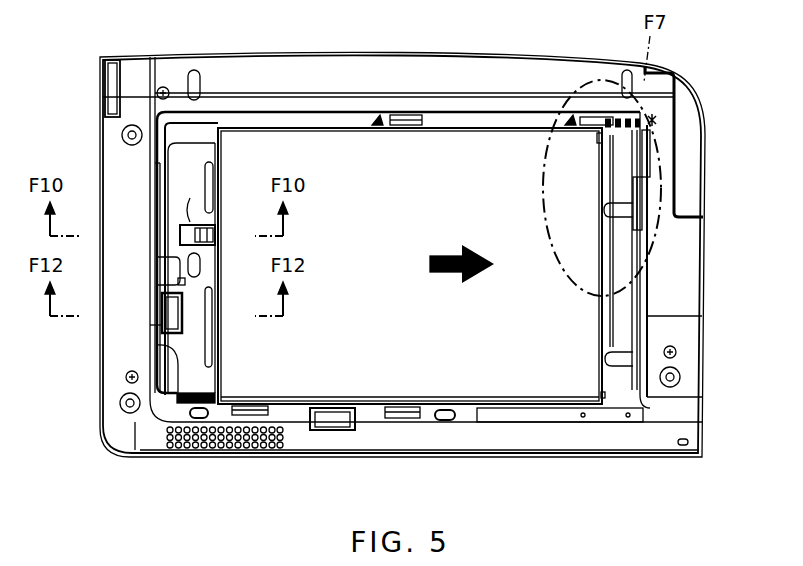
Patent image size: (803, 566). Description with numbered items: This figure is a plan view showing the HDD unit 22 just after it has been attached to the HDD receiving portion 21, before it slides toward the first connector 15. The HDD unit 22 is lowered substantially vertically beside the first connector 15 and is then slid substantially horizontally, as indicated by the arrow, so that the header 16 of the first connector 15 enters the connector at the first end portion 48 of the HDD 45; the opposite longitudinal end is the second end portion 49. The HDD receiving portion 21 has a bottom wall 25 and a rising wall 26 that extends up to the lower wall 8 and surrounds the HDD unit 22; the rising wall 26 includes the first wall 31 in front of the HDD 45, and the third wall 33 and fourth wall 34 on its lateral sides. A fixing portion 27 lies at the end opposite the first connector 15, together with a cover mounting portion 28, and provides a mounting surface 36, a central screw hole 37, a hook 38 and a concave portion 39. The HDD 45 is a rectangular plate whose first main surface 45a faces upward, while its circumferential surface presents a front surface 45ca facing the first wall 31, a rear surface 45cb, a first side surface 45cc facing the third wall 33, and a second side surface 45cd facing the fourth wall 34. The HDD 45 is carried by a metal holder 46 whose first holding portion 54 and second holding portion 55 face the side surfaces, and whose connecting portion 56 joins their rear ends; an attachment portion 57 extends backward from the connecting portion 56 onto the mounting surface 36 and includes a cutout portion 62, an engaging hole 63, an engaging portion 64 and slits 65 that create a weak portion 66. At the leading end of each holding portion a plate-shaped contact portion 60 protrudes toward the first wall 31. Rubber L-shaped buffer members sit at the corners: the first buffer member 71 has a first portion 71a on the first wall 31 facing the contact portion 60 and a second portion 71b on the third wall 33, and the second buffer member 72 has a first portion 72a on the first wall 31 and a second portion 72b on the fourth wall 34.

The lower wall 8 is at (490, 75).
The first connector 15 is at (625, 304).
The header 16 is at (620, 252).
The HDD receiving portion 21 is at (476, 420).
The HDD unit 22 is at (349, 150).
The bottom wall 25 is at (627, 155).
The rising wall 26 is at (554, 420).
The fixing portion 27 is at (176, 135).
The cover mounting portion 28 is at (316, 117).
The first wall 31 is at (667, 187).
The third wall 33 is at (437, 118).
The fourth wall 34 is at (368, 431).
The mounting surface 36 is at (148, 358).
The screw hole 37 is at (192, 262).
The hook 38 is at (195, 233).
The concave portion 39 is at (160, 355).
The HDD 45 is at (525, 147).
The first main surface 45a is at (446, 219).
The front surface 45ca is at (598, 177).
The rear surface 45cb is at (219, 340).
The first side surface 45cc is at (440, 134).
The second side surface 45cd is at (430, 398).
The holder 46 is at (291, 418).
The first end portion 48 is at (580, 383).
The second end portion 49 is at (230, 426).
The first holding portion 54 is at (400, 115).
The second holding portion 55 is at (411, 419).
The connecting portion 56 is at (216, 251).
The attachment portion 57 is at (166, 180).
The contact portion 60 is at (598, 141).
The cutout portion 62 is at (160, 313).
The engaging hole 63 is at (189, 196).
The engaging portion 64 is at (176, 313).
The slits 65 is at (214, 170).
The weak portion 66 is at (216, 216).
The first buffer member 71 is at (654, 120).
The first portion 71a is at (656, 127).
The second portion 71b is at (612, 115).
The second buffer member 72 is at (634, 420).
The first portion 72a is at (640, 400).
The second portion 72b is at (617, 412).